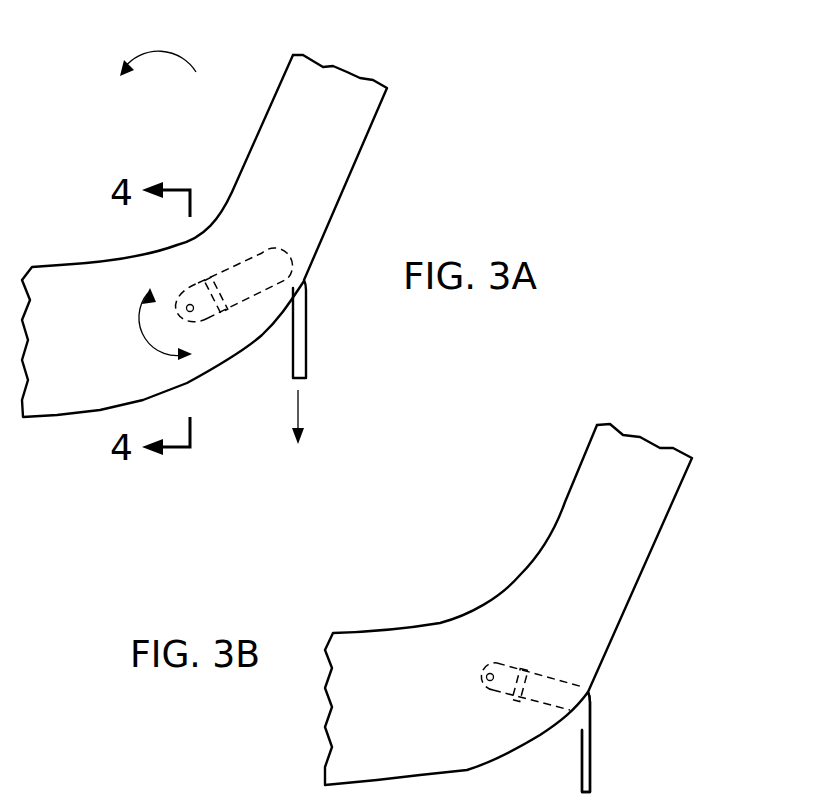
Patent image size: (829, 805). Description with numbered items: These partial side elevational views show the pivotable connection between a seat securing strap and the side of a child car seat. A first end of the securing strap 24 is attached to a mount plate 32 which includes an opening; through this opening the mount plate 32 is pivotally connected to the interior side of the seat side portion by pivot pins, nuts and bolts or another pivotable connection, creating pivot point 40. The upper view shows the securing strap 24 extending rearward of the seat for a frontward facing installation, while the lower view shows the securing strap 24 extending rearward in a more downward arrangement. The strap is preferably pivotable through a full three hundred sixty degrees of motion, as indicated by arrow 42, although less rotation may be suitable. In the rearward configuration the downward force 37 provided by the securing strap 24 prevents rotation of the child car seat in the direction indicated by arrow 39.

In FIG. 3A, the securing strap 24 is at (260, 250).
In FIG. 3B, the securing strap 24 is at (592, 745).
In FIG. 3A, the mount plate 32 is at (182, 303).
In FIG. 3B, the mount plate 32 is at (494, 662).
In FIG. 3A, the downward force 37 is at (300, 422).
In FIG. 3A, the arrow indicating direction of seat rotation 39 is at (162, 48).
In FIG. 3A, the pivot point 40 is at (200, 317).
In FIG. 3B, the pivot point 40 is at (483, 684).
In FIG. 3A, the arrow indicating pivotable motion 42 is at (140, 322).